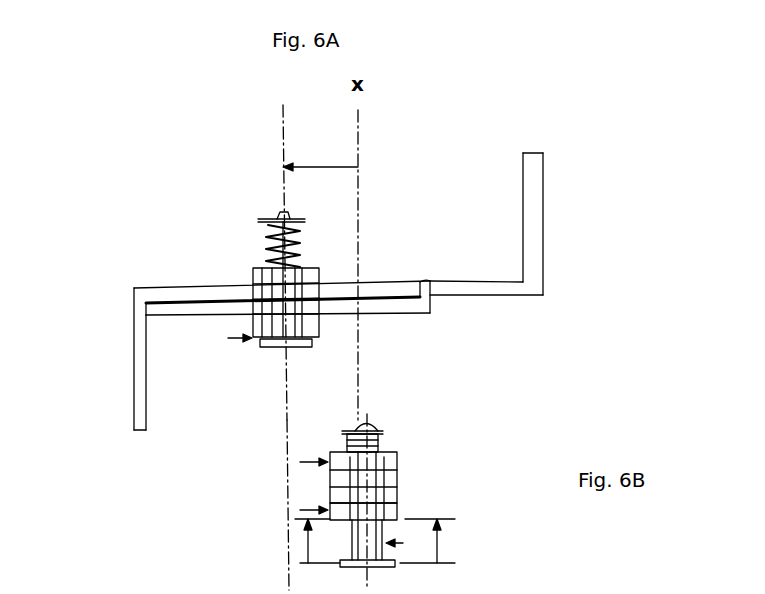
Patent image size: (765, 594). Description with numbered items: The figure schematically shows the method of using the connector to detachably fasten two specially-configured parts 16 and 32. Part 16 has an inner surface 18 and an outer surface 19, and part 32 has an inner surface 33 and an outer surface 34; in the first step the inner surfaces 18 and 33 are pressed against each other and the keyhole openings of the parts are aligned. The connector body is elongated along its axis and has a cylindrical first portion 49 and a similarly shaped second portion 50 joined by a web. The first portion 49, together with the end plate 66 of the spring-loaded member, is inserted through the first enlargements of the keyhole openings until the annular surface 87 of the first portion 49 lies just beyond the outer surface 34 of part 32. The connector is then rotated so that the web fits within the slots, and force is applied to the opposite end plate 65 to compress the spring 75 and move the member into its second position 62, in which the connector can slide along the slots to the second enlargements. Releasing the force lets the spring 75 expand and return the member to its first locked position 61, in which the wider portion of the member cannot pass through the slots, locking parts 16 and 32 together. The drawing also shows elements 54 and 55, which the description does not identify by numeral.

In FIG. 6A, the part 16 is at (556, 281).
In FIG. 6A, the inner surface 18 is at (452, 297).
In FIG. 6A, the outer surface 19 is at (393, 282).
In FIG. 6A, the part 32 is at (128, 320).
In FIG. 6A, the inner surface 33 is at (408, 298).
In FIG. 6A, the outer surface 34 is at (383, 313).
In FIG. 6A, the first portion 49 is at (244, 325).
In FIG. 6A, the second portion 50 is at (246, 277).
In FIG. 6B, the lower nut portion 54 is at (408, 510).
In FIG. 6B, the adjusting nut 55 is at (404, 457).
In FIG. 6B, the first locked position 61 is at (455, 519).
In FIG. 6B, the second position 62 is at (455, 563).
In FIG. 6A, the end plate 65 is at (303, 221).
In FIG. 6A, the end plate 66 is at (318, 344).
In FIG. 6A, the spring 75 is at (300, 243).
In FIG. 6A, the leftwardly-facing annular vertical surface 87 is at (322, 312).